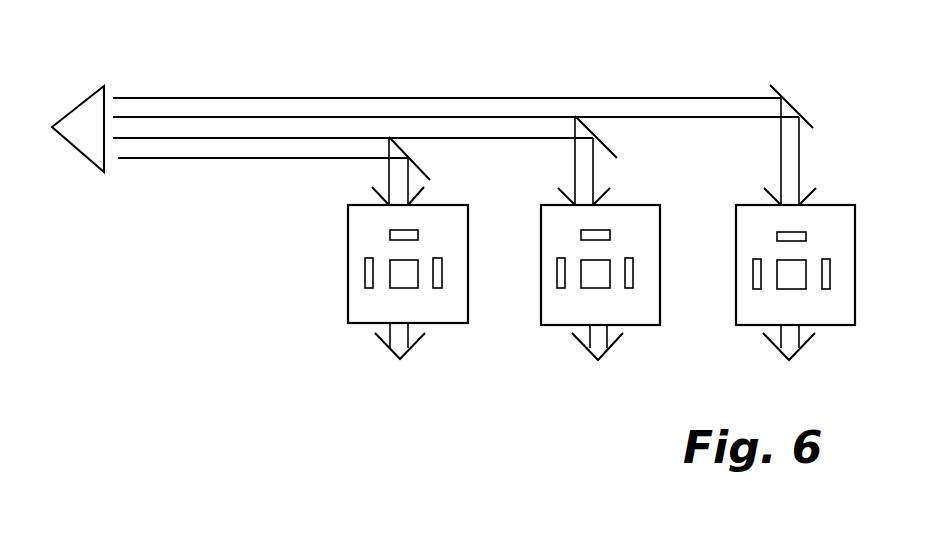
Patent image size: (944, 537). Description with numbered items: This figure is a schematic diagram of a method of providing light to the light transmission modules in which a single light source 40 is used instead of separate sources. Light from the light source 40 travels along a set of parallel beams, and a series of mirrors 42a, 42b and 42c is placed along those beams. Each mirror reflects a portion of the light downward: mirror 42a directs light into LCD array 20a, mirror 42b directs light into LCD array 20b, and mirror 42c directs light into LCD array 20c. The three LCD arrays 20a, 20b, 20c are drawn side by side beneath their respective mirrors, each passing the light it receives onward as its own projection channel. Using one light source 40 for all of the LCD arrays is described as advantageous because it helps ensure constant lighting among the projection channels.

The light source 40 is at (91, 95).
The mirror 42a is at (395, 144).
The mirror 42b is at (586, 130).
The mirror 42c is at (791, 100).
The LCD array 20a is at (348, 233).
The LCD array 20b is at (660, 222).
The LCD array 20c is at (855, 241).